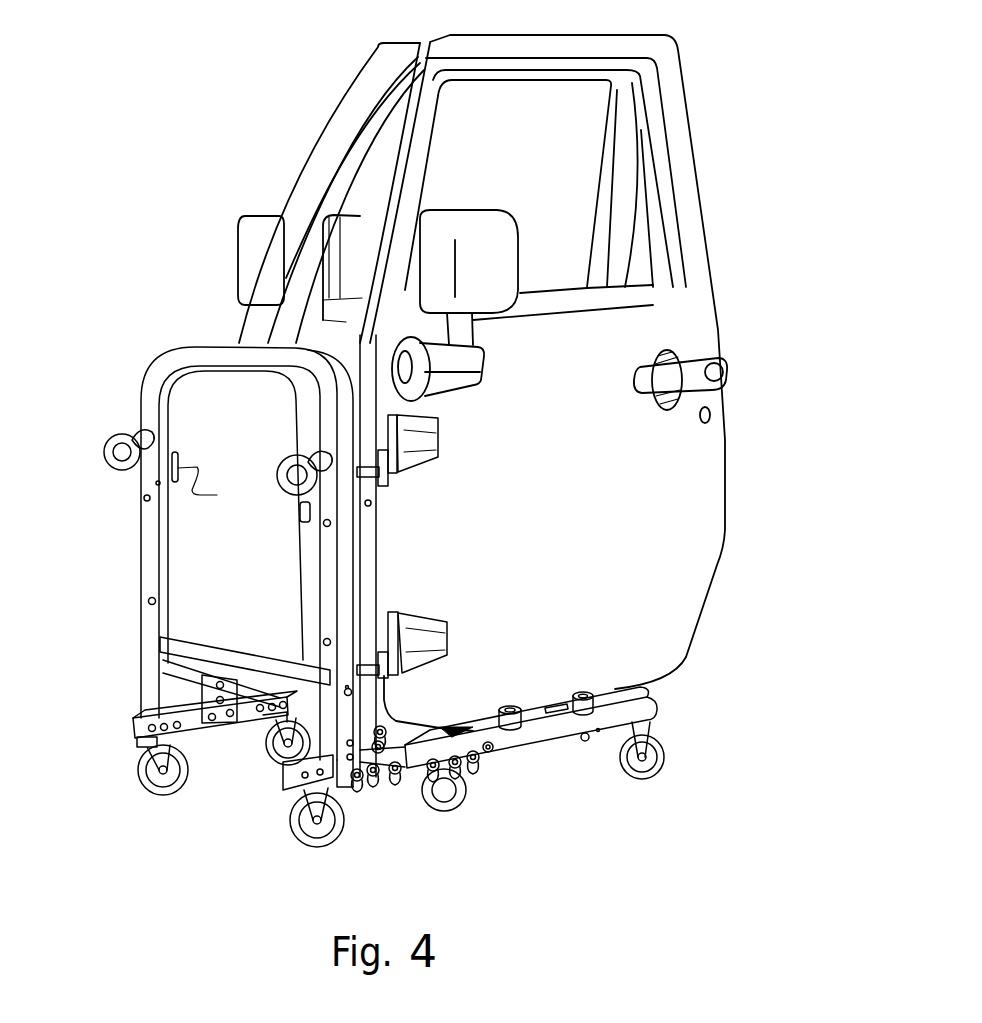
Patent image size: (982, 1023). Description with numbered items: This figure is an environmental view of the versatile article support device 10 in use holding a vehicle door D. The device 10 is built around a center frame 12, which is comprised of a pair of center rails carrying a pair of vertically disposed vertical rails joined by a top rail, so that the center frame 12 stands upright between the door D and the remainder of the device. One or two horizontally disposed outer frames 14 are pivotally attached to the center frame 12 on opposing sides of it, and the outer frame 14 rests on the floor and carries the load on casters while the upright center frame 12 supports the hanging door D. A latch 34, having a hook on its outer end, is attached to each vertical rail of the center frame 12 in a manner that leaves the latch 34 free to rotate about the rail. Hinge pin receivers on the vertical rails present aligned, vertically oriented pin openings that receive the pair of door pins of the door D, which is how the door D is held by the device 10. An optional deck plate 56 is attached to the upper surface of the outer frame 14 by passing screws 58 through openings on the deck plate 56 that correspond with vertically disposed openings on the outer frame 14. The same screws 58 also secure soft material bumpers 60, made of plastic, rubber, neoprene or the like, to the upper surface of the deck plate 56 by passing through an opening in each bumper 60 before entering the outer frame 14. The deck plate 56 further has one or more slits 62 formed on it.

The versatile article support device 10 is at (383, 625).
The center frame 12 is at (370, 530).
The outer frame 14 is at (140, 547).
The latch 34 is at (297, 516).
The deck plate 56 is at (476, 726).
The screws 58 is at (150, 601).
The bumper 60 is at (592, 707).
The slit 62 is at (552, 706).
The door D is at (628, 448).